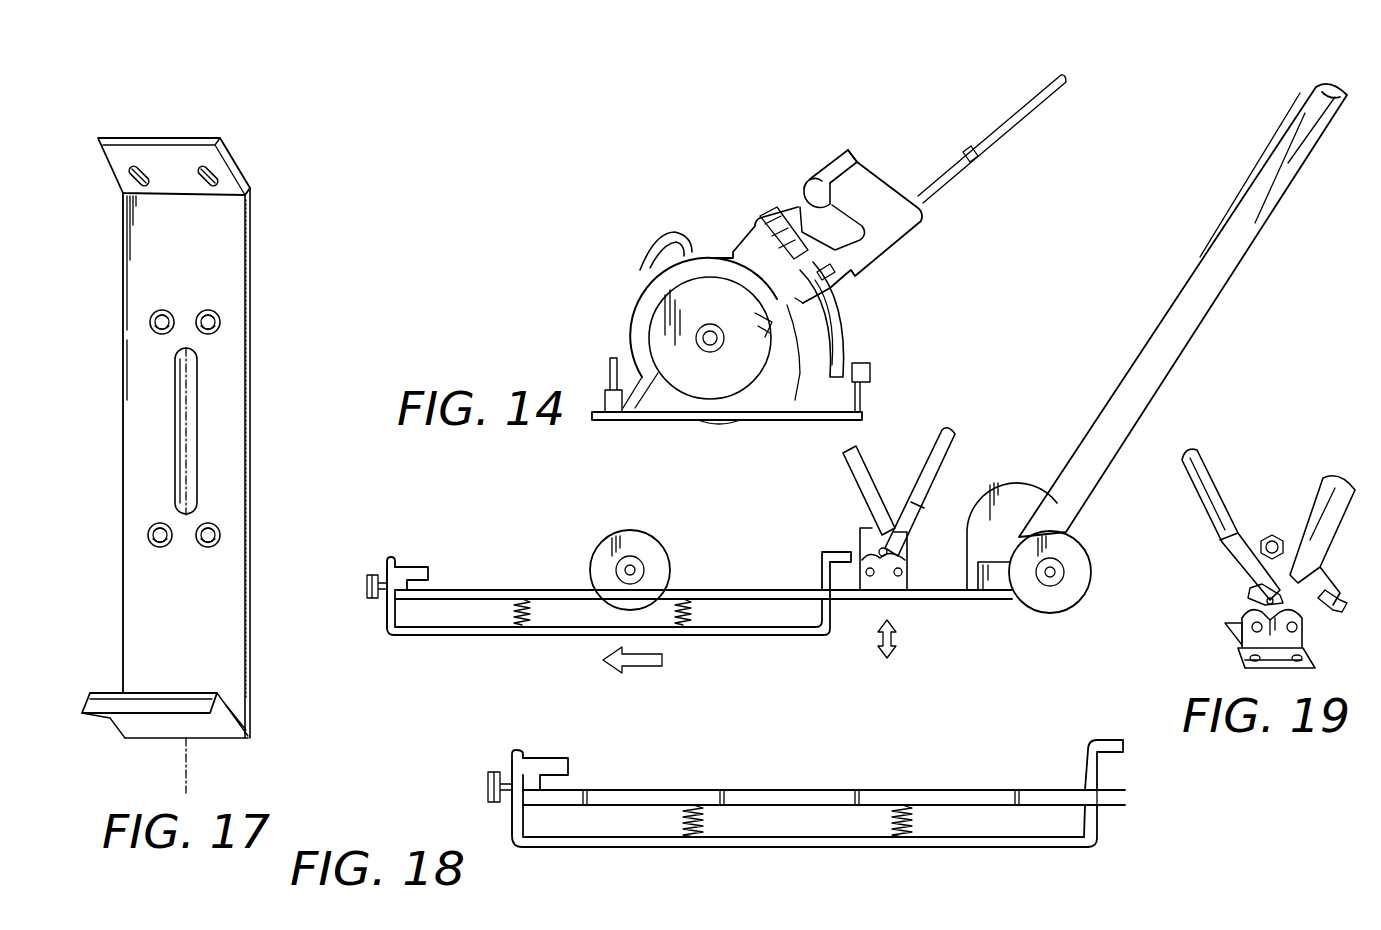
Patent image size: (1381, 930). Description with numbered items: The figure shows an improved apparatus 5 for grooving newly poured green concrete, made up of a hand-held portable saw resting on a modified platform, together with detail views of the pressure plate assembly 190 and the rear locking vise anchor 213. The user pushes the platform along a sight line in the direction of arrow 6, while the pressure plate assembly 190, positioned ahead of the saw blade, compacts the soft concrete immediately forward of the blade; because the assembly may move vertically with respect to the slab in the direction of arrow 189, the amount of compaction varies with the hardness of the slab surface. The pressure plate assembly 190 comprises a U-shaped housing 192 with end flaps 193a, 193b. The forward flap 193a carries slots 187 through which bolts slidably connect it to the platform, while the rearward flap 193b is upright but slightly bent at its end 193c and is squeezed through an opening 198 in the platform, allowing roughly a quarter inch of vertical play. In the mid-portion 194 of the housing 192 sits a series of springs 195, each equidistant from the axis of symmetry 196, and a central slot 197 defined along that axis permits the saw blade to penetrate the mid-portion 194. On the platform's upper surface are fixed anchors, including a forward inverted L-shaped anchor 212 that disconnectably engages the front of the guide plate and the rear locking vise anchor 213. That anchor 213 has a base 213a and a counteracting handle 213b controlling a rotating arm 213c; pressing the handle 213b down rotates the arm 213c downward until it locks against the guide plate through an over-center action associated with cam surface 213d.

In FIG. 17, the slots 187 is at (138, 166).
In FIG. 17, the forward flap 193a is at (236, 168).
In FIG. 18, the forward flap 193a is at (383, 568).
In FIG. 17, the mid-portion 194 is at (222, 390).
In FIG. 18, the mid-portion 194 is at (735, 842).
In FIG. 17, the axis of symmetry 196 is at (187, 453).
In FIG. 17, the pressure plate assembly 190 is at (100, 430).
In FIG. 18, the pressure plate assembly 190 is at (478, 640).
In FIG. 17, the central slot 197 is at (178, 440).
In FIG. 17, the springs 195 is at (203, 548).
In FIG. 18, the springs 195 is at (703, 820).
In FIG. 17, the U-shaped housing 192 is at (252, 655).
In FIG. 18, the U-shaped housing 192 is at (867, 853).
In FIG. 17, the rearward flap 193b is at (122, 727).
In FIG. 18, the rearward flap 193b is at (822, 580).
In FIG. 18, the bent end 193c is at (1100, 740).
In FIG. 18, the opening 198 is at (1102, 797).
In FIG. 18, the forward inverted L-shaped anchor 212 is at (420, 566).
In FIG. 18, the rear locking vise anchor 213 is at (875, 465).
In FIG. 19, the rear locking vise anchor 213 is at (1251, 521).
In FIG. 19, the base 213a is at (1240, 643).
In FIG. 19, the handle 213b is at (1215, 487).
In FIG. 19, the rotating arm 213c is at (1362, 505).
In FIG. 19, the cam surface 213d is at (1250, 592).
In FIG. 18, the arrow 189 is at (896, 655).
In FIG. 18, the arrow 6 is at (650, 670).
In FIG. 14, the improved apparatus 5 is at (1040, 278).
In FIG. 18, the improved apparatus 5 is at (1183, 310).